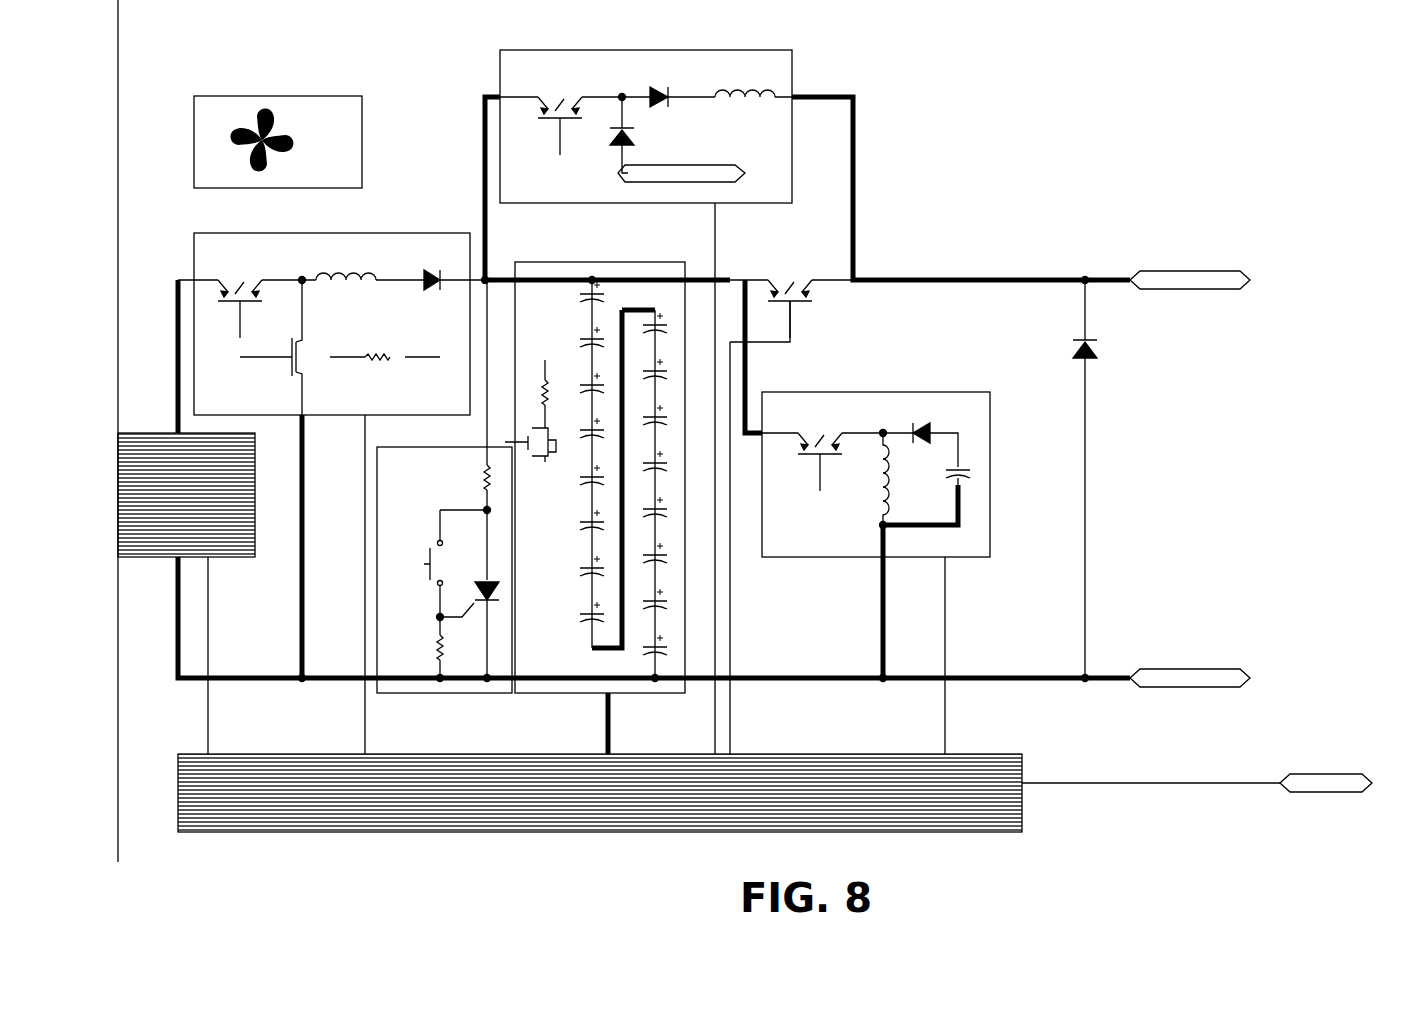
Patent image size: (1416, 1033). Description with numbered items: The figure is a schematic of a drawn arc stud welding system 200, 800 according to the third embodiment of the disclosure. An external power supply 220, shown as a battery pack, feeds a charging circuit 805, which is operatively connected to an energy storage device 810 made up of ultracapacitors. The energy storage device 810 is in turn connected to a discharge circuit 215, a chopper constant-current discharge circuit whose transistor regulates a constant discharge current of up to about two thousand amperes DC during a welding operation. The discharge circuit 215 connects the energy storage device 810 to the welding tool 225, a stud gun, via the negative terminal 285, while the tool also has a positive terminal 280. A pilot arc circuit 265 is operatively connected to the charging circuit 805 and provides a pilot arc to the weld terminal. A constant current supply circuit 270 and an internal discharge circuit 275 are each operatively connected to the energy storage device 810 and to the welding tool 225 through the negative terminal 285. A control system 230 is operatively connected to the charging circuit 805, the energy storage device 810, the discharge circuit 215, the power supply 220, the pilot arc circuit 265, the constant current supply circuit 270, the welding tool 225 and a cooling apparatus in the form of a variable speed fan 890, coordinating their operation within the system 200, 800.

The drawn arc stud welding system 800 is at (1316, 108).
The variable speed fan 890 is at (190, 113).
The charging circuit 805 is at (190, 265).
The energy storage device 810 is at (530, 258).
The pilot arc circuit 265 is at (808, 42).
The negative terminal 285 is at (727, 158).
The discharge circuit 215 is at (792, 240).
The positive terminal 280 is at (1185, 258).
The constant current supply circuit 270 is at (860, 380).
The drawn arc stud welding system 200 is at (1113, 375).
The external power supply 220 is at (148, 428).
The internal discharge circuit 275 is at (445, 700).
The control system 230 is at (1032, 826).
The welding tool 225 is at (1333, 808).